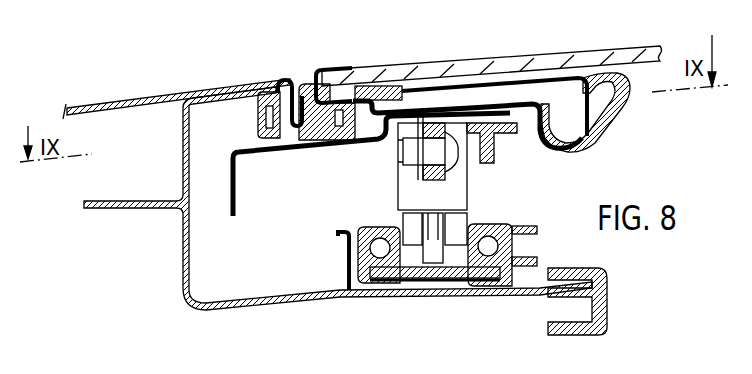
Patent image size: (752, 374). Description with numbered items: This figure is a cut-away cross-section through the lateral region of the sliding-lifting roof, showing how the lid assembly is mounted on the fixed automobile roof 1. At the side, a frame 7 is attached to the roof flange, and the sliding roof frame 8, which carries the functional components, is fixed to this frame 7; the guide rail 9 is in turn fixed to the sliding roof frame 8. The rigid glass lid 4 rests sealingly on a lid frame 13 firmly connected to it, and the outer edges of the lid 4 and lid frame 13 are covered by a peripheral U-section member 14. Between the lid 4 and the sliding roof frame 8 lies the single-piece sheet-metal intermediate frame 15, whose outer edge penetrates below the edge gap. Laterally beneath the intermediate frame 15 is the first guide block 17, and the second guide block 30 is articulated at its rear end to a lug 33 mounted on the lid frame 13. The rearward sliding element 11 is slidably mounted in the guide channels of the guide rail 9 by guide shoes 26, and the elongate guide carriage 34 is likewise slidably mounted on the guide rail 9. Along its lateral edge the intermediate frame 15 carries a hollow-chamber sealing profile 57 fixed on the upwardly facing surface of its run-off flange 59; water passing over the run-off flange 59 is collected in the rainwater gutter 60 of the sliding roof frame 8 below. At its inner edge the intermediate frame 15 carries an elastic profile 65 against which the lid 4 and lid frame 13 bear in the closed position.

The automobile roof 1 is at (126, 98).
The lid 4 is at (580, 54).
The frame 7 is at (183, 127).
The sliding roof frame 8 is at (217, 309).
The guide rail 9 is at (510, 226).
The rearward sliding element 11 is at (386, 213).
The lid frame 13 is at (550, 76).
The U-section member 14 is at (337, 67).
The intermediate frame 15 is at (533, 117).
The first guide block 17 is at (494, 155).
The guide shoes 26 is at (385, 290).
The second guide block 30 is at (448, 172).
The lug 33 is at (421, 125).
The guide carriage 34 is at (436, 284).
The sealing profile 57 is at (252, 114).
The run-off flange 59 is at (236, 174).
The rainwater gutter 60 is at (279, 296).
The elastic profile 65 is at (608, 113).